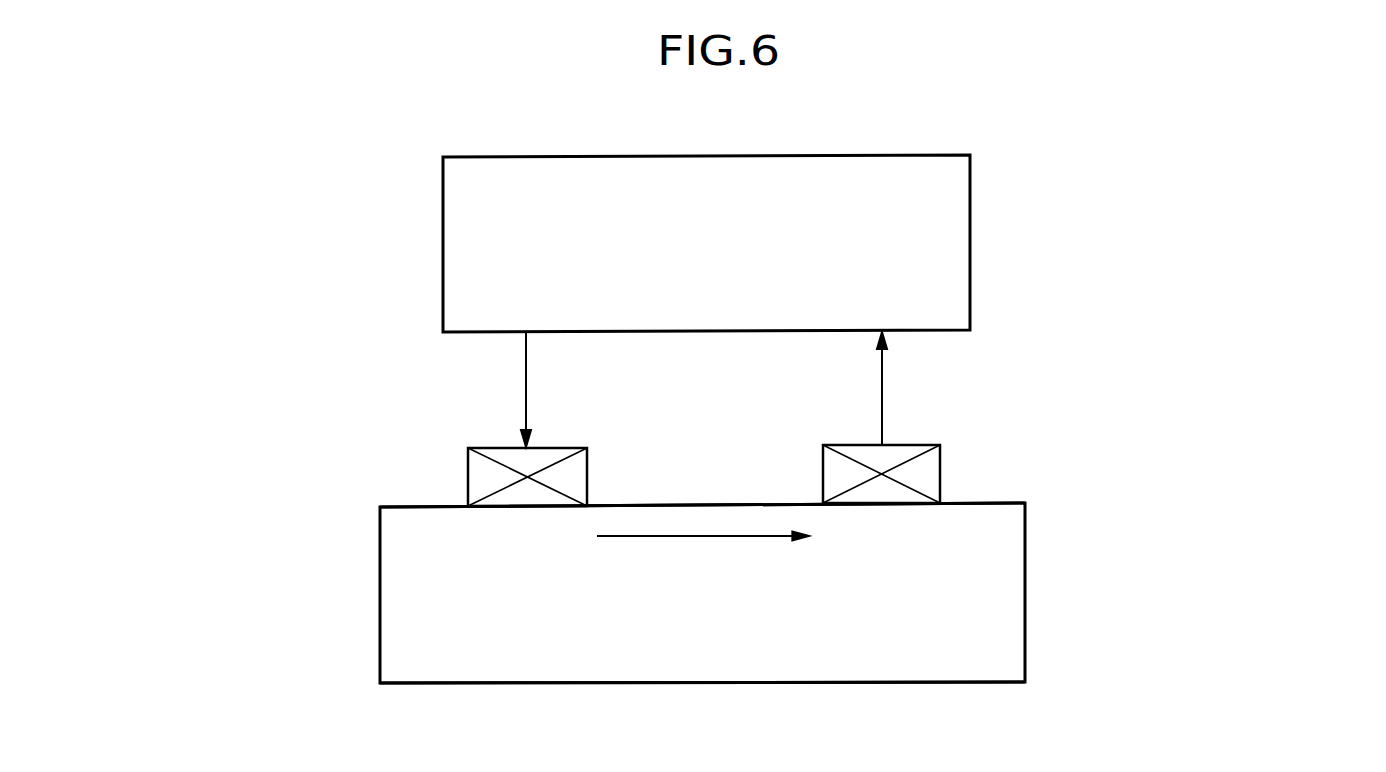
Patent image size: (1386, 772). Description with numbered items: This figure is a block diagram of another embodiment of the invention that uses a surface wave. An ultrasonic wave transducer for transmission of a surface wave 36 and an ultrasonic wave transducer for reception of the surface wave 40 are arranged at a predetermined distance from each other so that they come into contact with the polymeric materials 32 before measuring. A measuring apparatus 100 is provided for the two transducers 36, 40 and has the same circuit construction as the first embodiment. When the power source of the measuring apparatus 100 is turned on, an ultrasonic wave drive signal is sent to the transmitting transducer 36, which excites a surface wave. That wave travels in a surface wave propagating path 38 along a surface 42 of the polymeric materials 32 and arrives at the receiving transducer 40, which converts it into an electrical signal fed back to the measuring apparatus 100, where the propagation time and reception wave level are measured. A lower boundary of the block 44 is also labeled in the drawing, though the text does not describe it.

The measuring apparatus 100 is at (917, 256).
The polymeric materials 32 is at (380, 612).
The ultrasonic wave transducer for transmission of a surface wave 36 is at (487, 447).
The surface wave propagating path 38 is at (688, 538).
The ultrasonic wave transducer for reception of the surface wave 40 is at (917, 444).
The surface of the polymeric materials 42 is at (400, 507).
The lower surface of object 44 is at (667, 683).